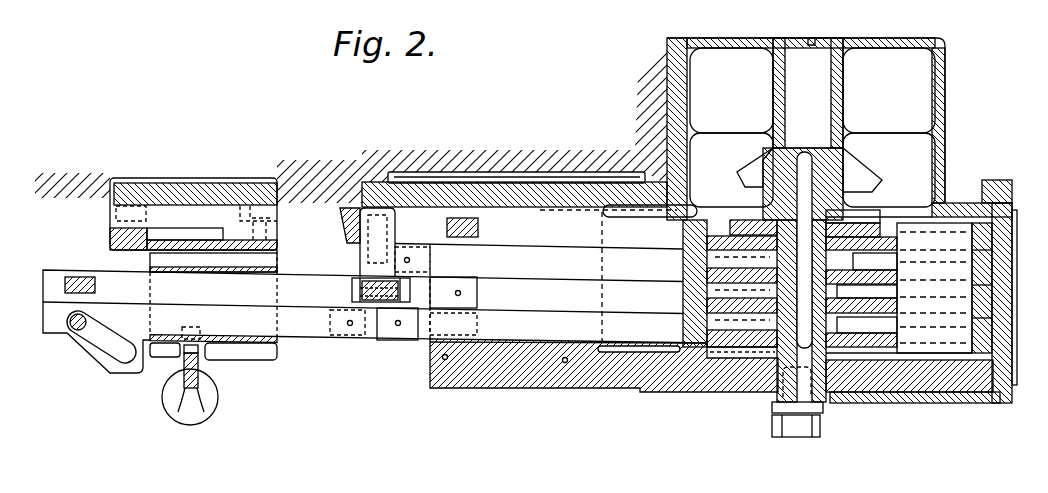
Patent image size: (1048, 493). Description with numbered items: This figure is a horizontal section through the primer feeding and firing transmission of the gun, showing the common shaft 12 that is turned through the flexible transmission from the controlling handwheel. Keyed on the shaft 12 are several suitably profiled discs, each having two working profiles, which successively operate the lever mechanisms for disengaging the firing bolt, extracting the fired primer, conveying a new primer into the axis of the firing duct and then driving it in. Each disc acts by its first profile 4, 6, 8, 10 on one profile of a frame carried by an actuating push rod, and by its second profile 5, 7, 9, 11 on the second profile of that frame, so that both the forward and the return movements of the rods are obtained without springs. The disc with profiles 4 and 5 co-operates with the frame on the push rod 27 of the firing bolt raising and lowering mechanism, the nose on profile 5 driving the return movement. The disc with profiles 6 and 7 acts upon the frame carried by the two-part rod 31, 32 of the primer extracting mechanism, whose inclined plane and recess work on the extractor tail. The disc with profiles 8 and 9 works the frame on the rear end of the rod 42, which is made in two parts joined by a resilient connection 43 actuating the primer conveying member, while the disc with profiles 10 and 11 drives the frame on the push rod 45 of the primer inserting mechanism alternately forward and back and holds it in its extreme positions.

The disc profile 4 is at (867, 225).
The disc profile 5 is at (893, 230).
The disc profile 6 is at (911, 264).
The disc profile 7 is at (935, 278).
The disc profile 8 is at (903, 296).
The disc profile 9 is at (935, 308).
The disc profile 10 is at (903, 325).
The disc profile 11 is at (935, 342).
The common shaft 12 is at (818, 182).
The push rod 27 is at (578, 227).
The rod part 31 is at (613, 260).
The rod part 32 is at (190, 223).
The rod 42 is at (550, 297).
The resilient connection 43 is at (360, 280).
The push rod 45 is at (593, 337).